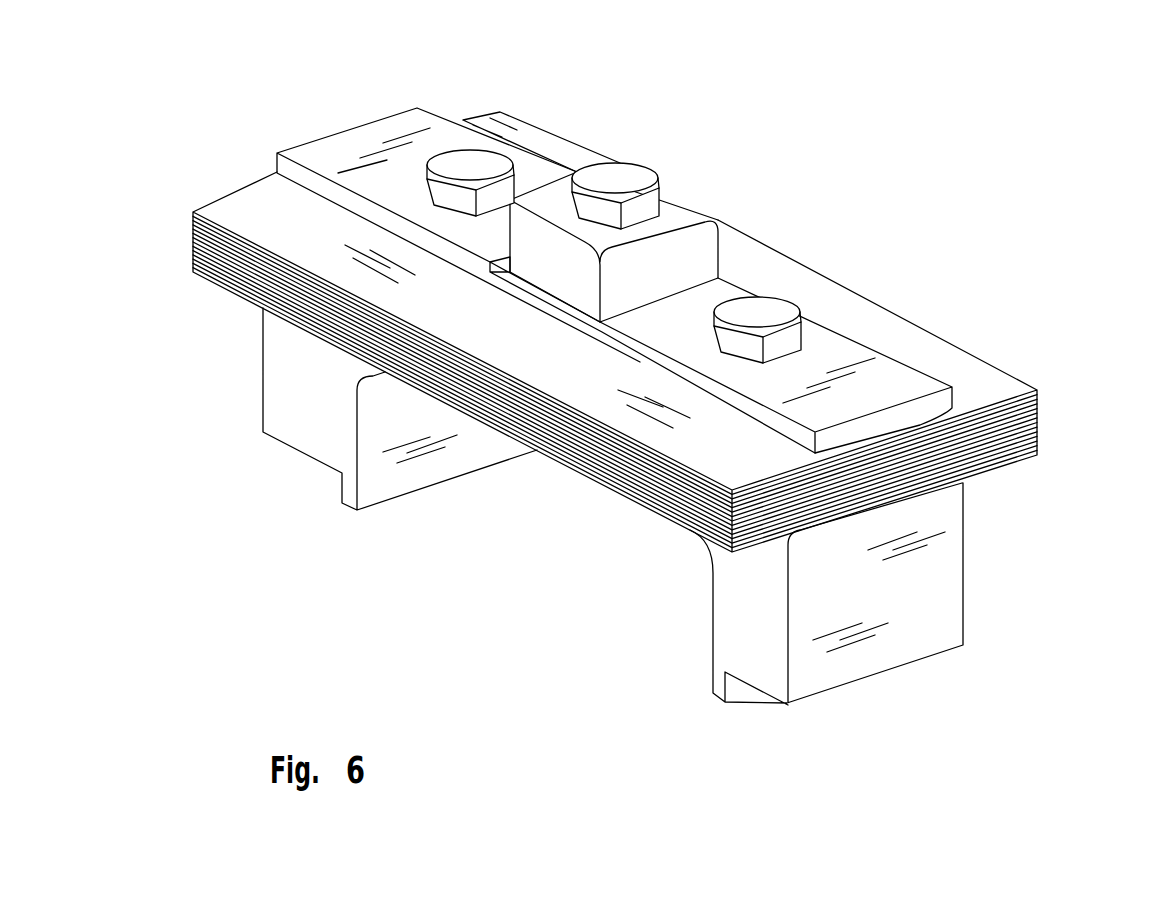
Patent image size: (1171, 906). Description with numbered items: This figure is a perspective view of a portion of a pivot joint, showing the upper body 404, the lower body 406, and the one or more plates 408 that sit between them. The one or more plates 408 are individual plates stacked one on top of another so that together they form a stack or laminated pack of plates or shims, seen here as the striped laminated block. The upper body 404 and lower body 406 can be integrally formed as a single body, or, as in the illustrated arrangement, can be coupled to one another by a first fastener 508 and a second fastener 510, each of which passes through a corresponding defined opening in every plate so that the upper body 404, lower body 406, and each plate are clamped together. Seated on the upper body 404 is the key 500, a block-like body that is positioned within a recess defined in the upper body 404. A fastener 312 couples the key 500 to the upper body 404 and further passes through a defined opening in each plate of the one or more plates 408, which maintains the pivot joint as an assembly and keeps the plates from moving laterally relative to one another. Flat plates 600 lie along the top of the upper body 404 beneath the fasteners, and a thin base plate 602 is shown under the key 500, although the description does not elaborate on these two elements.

The fastener 312 is at (617, 175).
The upper body 404 is at (676, 362).
The lower body 406 is at (943, 583).
The one or more plates 408 is at (1031, 433).
The key 500 is at (687, 218).
The first fastener 508 is at (468, 160).
The second fastener 510 is at (758, 305).
The insulating plate 600 is at (337, 150).
The base plate 602 is at (552, 312).